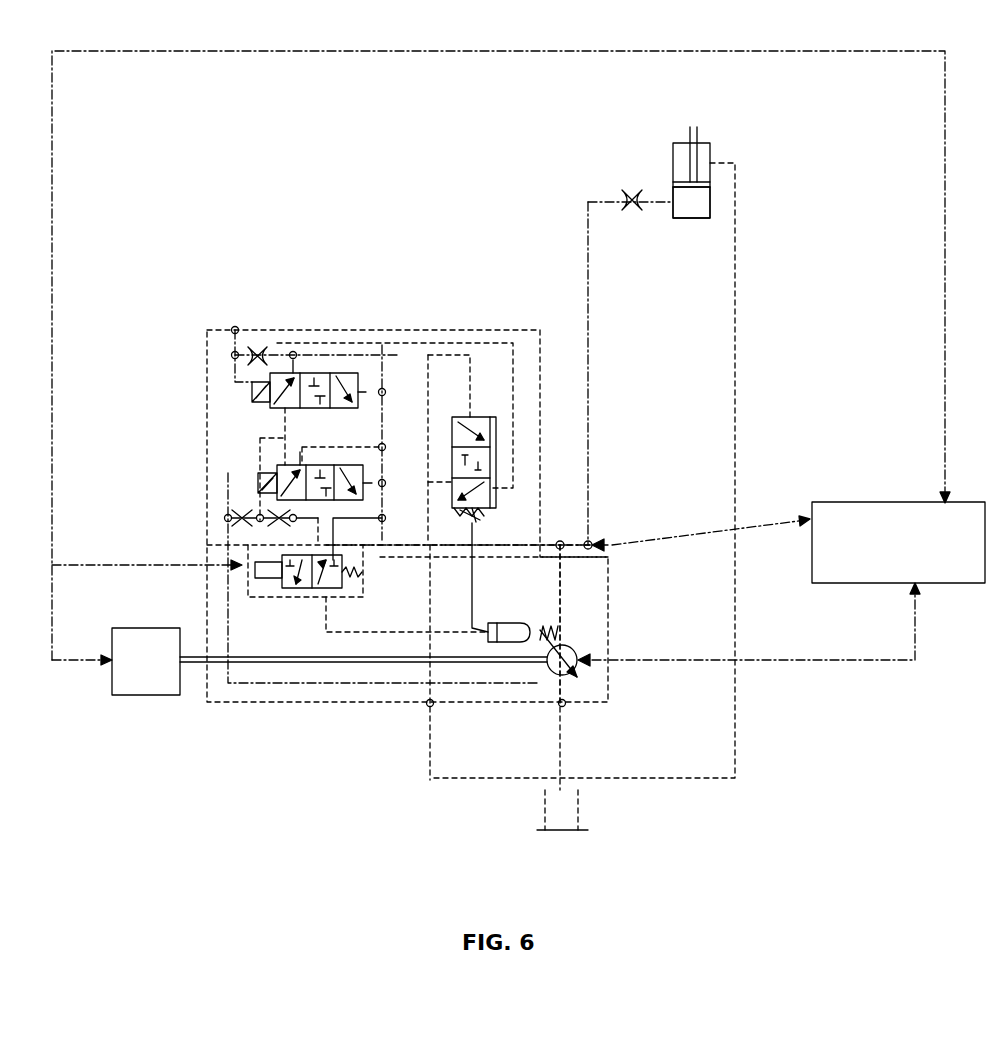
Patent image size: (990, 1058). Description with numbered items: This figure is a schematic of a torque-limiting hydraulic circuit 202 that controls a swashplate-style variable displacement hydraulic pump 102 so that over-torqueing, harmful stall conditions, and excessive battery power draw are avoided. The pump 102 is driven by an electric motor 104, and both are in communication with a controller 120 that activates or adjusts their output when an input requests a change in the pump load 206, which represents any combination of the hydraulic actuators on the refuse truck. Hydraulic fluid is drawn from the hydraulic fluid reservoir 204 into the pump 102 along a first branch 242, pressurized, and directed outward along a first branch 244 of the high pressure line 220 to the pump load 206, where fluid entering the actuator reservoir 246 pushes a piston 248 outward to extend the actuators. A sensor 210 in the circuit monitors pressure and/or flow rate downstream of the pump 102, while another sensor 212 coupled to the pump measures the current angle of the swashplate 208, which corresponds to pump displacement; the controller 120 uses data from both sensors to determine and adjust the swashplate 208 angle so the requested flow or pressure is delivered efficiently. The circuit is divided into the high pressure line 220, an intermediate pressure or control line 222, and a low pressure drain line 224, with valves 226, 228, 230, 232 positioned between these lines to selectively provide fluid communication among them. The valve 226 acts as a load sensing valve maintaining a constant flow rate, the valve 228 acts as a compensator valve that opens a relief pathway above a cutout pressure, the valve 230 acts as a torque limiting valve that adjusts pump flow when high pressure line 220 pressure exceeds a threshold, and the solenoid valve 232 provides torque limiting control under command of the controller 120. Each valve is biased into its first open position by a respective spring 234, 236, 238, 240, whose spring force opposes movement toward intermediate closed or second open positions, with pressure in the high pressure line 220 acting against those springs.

The hydraulic pump 102 is at (580, 673).
The electric motor 104 is at (130, 680).
The controller 120 is at (875, 502).
The hydraulic circuit 202 is at (462, 195).
The hydraulic fluid reservoir 204 is at (562, 832).
The pump load 206 is at (703, 155).
The swashplate 208 is at (543, 640).
The sensor 210 is at (603, 553).
The sensor 212 is at (488, 640).
The high pressure line 220 is at (588, 375).
The control line 222 is at (383, 633).
The drain line 224 is at (735, 293).
The load sensing valve 226 is at (330, 373).
The compensator valve 228 is at (347, 443).
The torque limiting valve 230 is at (490, 452).
The solenoid valve 232 is at (300, 593).
The spring 234 is at (252, 392).
The spring 236 is at (258, 485).
The spring 238 is at (480, 517).
The spring 240 is at (362, 572).
The first branch 242 is at (562, 740).
The first branch of the high pressure line 244 is at (560, 597).
The actuator reservoir 246 is at (692, 207).
The piston 248 is at (683, 178).